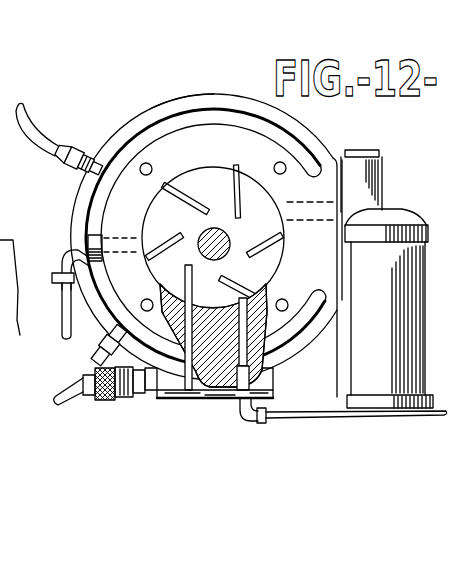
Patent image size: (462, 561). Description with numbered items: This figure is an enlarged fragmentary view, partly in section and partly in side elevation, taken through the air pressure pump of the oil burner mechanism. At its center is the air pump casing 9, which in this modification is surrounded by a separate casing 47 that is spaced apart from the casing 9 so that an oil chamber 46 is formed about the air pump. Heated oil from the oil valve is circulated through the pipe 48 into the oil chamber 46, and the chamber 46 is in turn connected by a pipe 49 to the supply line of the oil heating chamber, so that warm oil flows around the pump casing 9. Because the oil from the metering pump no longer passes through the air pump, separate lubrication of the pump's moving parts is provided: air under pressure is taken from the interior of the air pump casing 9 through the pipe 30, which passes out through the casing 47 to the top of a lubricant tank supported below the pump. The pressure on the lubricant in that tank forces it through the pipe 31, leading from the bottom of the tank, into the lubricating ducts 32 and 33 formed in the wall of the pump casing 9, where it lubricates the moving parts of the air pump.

The air pump casing 9 is at (113, 205).
The pipe 30 is at (67, 312).
The pipe 31 is at (321, 419).
The lubricating duct 32 is at (262, 347).
The lubricating duct 33 is at (123, 327).
The oil chamber 46 is at (165, 126).
The casing 47 is at (227, 99).
The pipe 48 is at (43, 140).
The pipe 49 is at (77, 398).